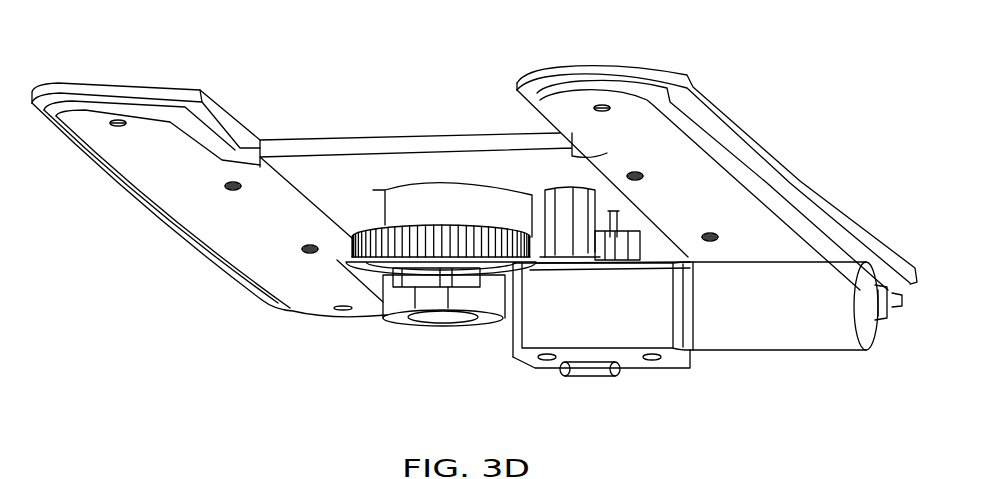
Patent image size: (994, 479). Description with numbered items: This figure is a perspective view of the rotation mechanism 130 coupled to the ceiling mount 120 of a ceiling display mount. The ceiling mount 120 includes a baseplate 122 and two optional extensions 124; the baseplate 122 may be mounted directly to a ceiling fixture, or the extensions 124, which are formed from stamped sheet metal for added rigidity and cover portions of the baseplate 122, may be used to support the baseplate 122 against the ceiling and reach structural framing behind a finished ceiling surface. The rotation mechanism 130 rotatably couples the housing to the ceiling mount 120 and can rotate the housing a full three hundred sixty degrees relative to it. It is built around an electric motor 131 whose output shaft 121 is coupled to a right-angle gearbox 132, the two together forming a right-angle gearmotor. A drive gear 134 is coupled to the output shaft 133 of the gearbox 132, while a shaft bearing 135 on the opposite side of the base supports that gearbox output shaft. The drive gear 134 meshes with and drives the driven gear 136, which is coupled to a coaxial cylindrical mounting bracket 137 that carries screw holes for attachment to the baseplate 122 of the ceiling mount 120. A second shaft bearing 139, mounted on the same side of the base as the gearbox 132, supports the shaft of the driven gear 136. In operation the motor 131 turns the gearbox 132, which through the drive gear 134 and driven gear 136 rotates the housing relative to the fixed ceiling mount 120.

The ceiling mount 120 is at (327, 142).
The baseplate 122 is at (470, 175).
The extensions 124 is at (283, 233).
The rotation mechanism 130 is at (373, 385).
The electric motor 131 is at (803, 321).
The right-angle gearbox 132 is at (590, 339).
The output shaft 133 is at (607, 268).
The drive gear 134 is at (640, 245).
The shaft bearing 135 is at (613, 212).
The driven gear 136 is at (363, 262).
The cylindrical mounting bracket 137 is at (455, 213).
The shaft bearing 139 is at (486, 293).
The output shaft 121 is at (897, 302).